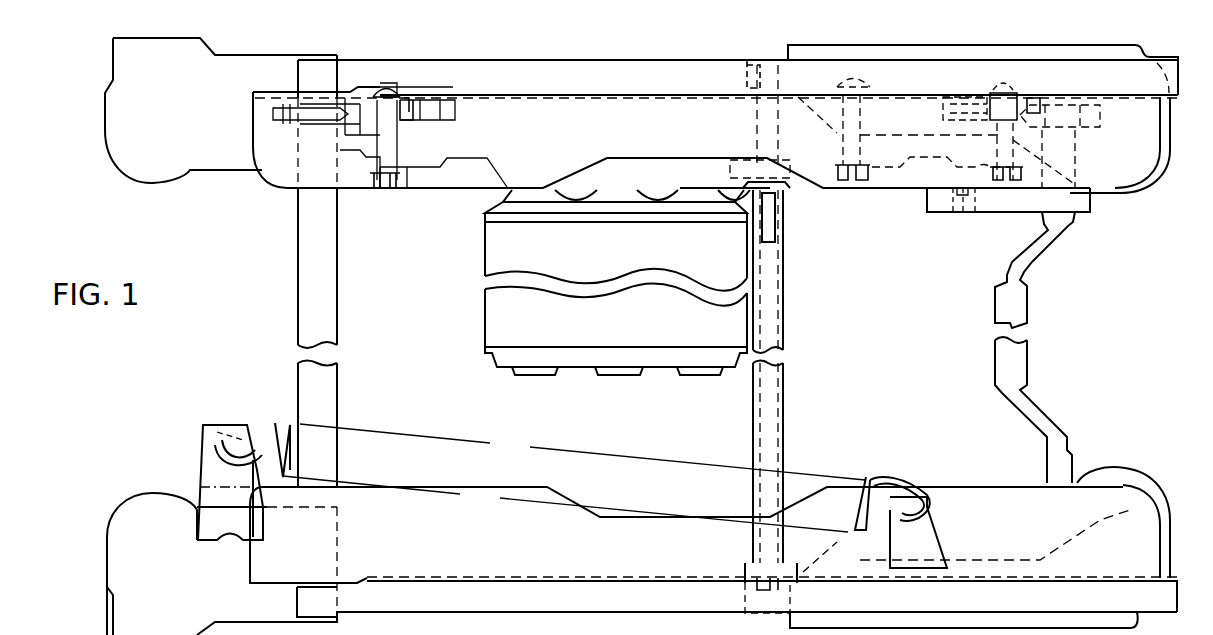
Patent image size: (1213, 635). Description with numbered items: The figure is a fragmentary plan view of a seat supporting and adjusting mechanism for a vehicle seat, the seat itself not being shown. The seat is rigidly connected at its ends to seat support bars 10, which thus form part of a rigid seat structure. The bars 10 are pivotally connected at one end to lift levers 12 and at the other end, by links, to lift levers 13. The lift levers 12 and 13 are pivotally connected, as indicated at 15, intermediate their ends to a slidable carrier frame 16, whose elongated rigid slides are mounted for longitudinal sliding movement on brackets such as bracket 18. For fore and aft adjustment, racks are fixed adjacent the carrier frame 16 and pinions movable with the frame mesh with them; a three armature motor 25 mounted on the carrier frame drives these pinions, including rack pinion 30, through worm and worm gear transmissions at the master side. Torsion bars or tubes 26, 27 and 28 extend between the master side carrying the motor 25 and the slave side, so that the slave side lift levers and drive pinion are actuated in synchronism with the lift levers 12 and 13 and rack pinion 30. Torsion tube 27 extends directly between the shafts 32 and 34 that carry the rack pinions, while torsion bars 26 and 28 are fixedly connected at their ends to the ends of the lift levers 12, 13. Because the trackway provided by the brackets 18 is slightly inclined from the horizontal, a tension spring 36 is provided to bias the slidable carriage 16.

The seat support bars 10 is at (277, 155).
The lift levers 12 is at (457, 97).
The lift levers 13 is at (942, 98).
The pivotal connection 15 is at (618, 614).
The slidable carrier frame 16 is at (598, 36).
The bracket 18 is at (175, 495).
The three armature motor 25 is at (498, 321).
The torsion bar 26 is at (301, 383).
The torsion tube 27 is at (787, 396).
The torsion bar 28 is at (1019, 369).
The rack pinion 30 is at (746, 74).
The shaft 32 is at (760, 125).
The shaft 34 is at (797, 545).
The tension spring 36 is at (880, 478).